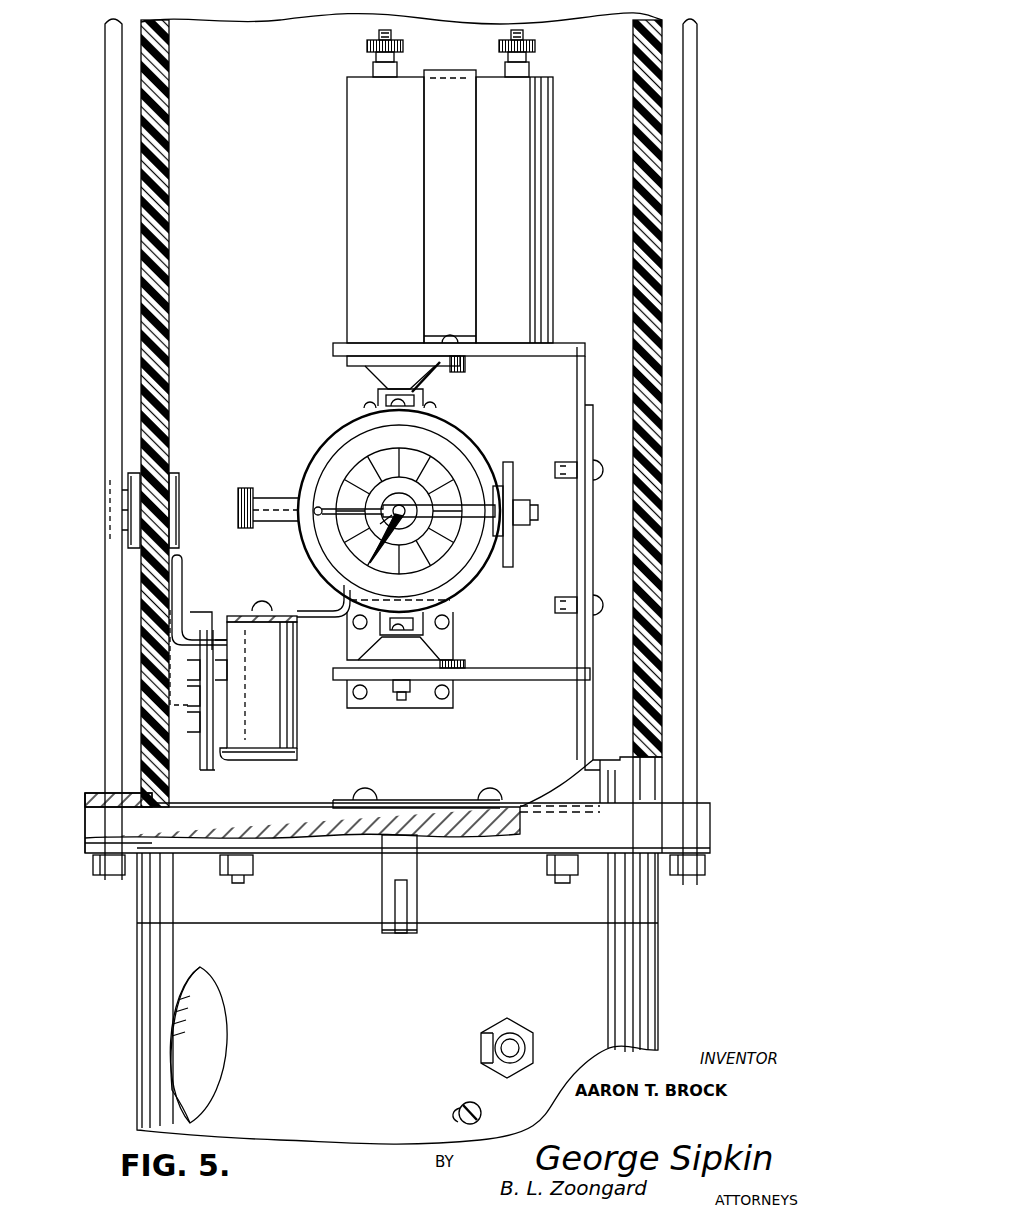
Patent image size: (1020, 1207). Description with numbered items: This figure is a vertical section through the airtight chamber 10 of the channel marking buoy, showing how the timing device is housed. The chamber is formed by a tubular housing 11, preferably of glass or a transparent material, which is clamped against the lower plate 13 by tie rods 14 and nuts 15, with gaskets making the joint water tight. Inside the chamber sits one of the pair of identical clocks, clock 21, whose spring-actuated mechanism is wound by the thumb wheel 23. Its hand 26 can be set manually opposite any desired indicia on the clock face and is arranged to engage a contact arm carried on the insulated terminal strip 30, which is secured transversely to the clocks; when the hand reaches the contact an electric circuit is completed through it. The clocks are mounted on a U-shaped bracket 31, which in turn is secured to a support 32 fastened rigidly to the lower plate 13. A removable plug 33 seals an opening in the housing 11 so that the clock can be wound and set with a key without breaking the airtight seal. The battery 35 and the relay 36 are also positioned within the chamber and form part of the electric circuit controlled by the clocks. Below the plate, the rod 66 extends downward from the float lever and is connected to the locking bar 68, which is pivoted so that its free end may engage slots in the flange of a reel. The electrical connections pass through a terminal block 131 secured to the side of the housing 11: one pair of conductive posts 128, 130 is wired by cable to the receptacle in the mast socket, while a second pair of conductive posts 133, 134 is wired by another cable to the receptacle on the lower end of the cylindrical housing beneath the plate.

The airtight chamber 10 is at (134, 335).
The tubular housing 11 is at (662, 378).
The lower plate 13 is at (85, 816).
The tie rods 14 is at (105, 713).
The nuts 15 is at (93, 866).
The clock 21 is at (312, 458).
The thumb wheel 23 is at (247, 487).
The hand 26 is at (390, 534).
The insulated terminal strip 30 is at (513, 466).
The U-shaped bracket 31 is at (577, 379).
The support 32 is at (585, 718).
The removable plug 33 is at (180, 482).
The battery 35 is at (348, 186).
The relay 36 is at (302, 716).
The rod 66 is at (382, 870).
The locking bar 68 is at (407, 896).
The conductive post 128 is at (353, 627).
The conductive post 130 is at (448, 624).
The terminal block 131 is at (445, 655).
The conductive post 133 is at (353, 693).
The conductive post 134 is at (450, 693).